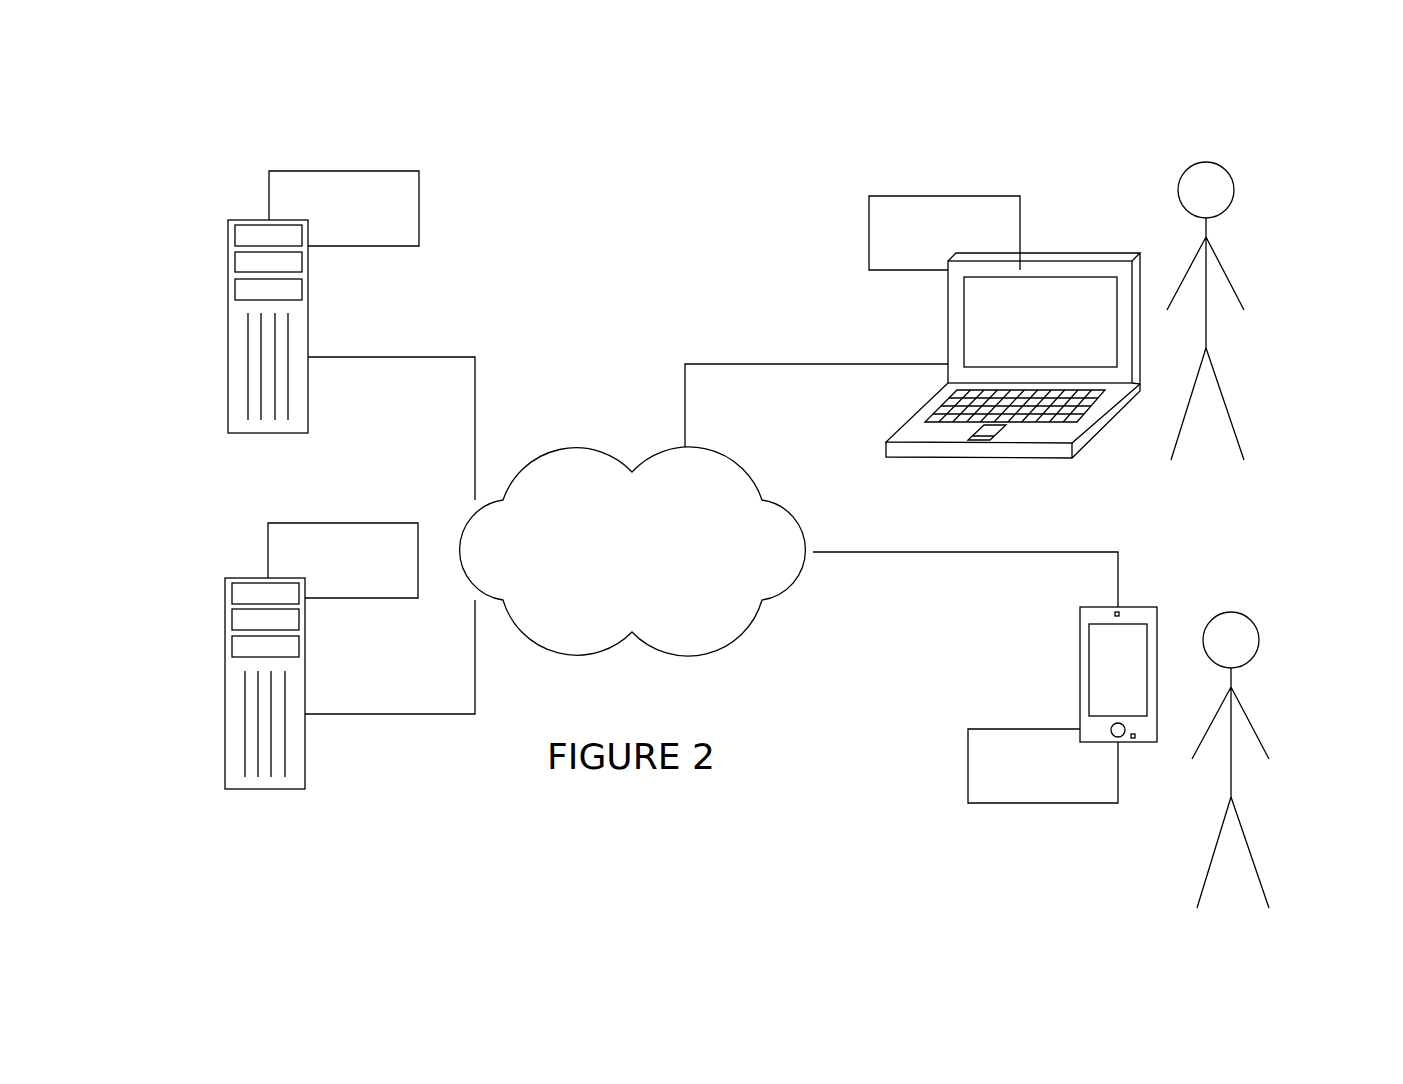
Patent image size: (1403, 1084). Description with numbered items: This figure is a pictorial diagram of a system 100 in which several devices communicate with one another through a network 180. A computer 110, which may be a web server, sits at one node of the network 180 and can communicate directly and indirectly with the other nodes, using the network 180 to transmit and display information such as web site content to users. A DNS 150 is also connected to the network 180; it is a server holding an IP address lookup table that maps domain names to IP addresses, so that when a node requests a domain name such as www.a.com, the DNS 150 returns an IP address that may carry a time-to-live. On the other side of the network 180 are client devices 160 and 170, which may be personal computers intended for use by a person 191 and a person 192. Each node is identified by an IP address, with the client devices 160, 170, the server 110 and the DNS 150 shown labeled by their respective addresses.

The system 100 is at (303, 113).
The computer 110 is at (228, 234).
The DNS 150 is at (225, 592).
The client device 160 is at (1080, 632).
The client device 170 is at (948, 346).
The network 180 is at (632, 471).
The person 191 is at (1232, 252).
The person 192 is at (1258, 683).